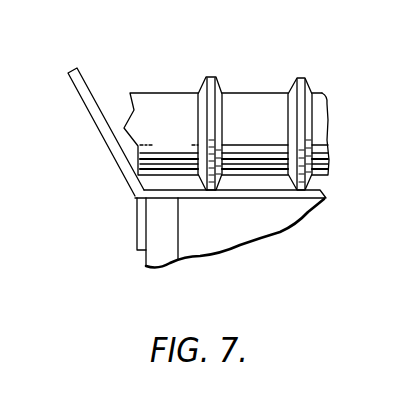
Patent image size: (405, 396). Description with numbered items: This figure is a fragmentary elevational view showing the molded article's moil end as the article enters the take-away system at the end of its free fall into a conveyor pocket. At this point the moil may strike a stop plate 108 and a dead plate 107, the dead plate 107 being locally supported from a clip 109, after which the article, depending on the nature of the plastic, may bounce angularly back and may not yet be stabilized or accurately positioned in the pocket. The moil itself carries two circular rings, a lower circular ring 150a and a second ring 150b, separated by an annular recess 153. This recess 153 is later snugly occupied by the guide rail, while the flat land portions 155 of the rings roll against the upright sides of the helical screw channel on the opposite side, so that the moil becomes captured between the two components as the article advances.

The dead plate 107 is at (232, 198).
The stop plate 108 is at (107, 142).
The clip 109 is at (150, 259).
The lower circular ring 150a is at (298, 78).
The circular ring 150b is at (213, 78).
The annular recess 153 is at (255, 182).
The flat land portions 155 is at (300, 121).